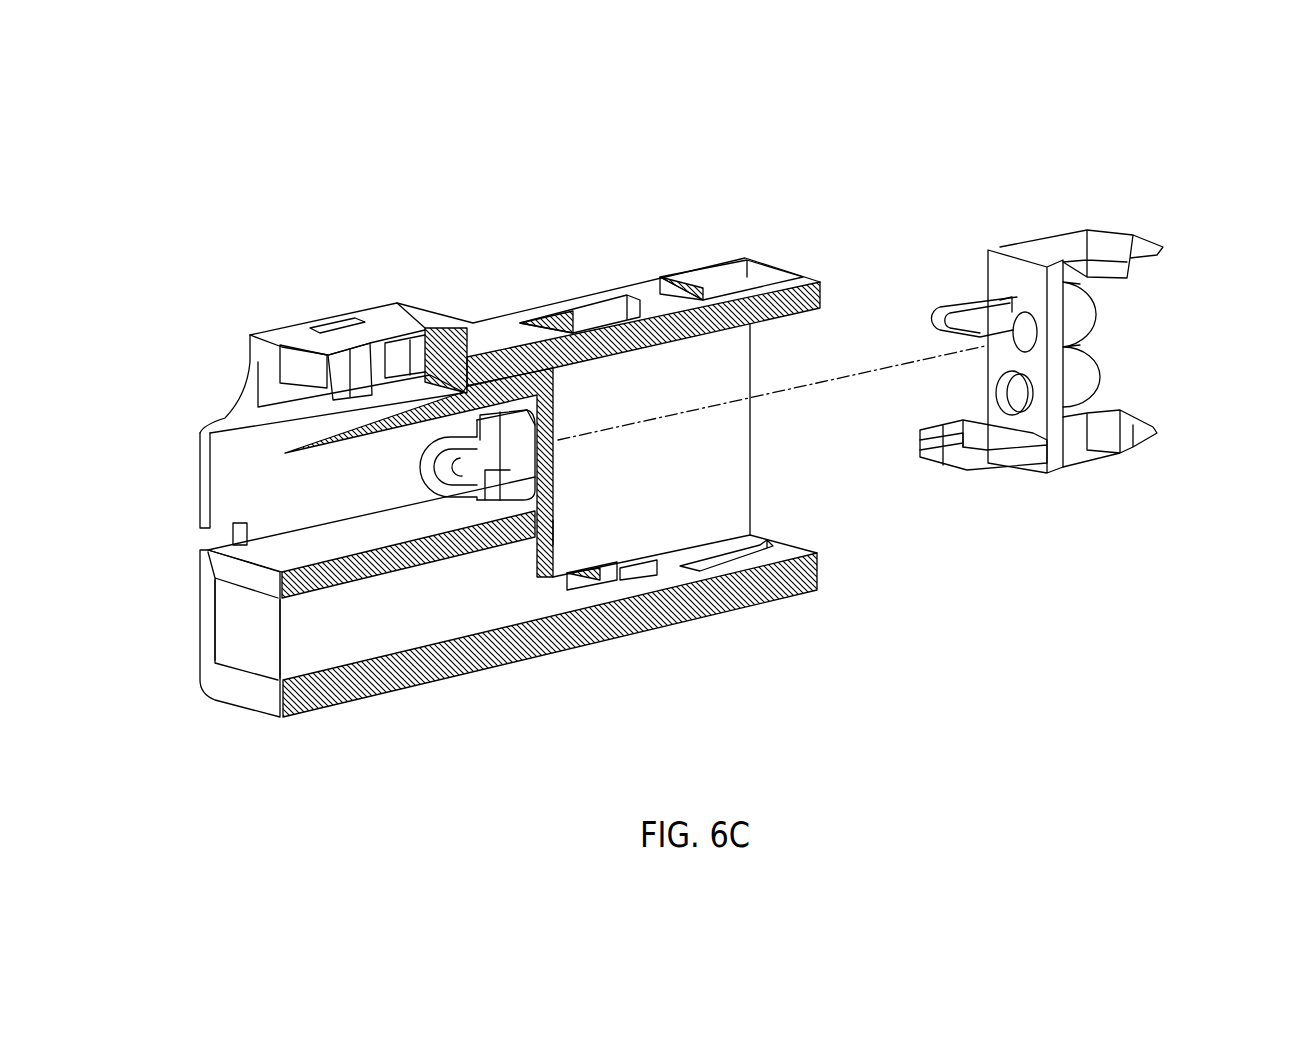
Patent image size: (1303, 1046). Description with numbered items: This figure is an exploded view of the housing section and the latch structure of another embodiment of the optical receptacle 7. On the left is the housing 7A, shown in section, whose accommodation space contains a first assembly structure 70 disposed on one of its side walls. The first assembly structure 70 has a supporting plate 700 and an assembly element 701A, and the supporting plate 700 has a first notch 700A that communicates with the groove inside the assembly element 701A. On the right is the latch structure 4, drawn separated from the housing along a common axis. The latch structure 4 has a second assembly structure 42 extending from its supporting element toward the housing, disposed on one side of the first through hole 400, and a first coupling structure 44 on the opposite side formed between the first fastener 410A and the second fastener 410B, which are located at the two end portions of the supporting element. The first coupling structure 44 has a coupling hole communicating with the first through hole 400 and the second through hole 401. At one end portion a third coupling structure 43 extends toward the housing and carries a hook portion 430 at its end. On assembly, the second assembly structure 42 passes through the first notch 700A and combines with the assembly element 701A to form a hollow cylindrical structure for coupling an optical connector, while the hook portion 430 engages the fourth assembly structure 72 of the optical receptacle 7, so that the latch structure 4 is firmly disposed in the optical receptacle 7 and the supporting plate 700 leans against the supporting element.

The optical receptacle 7 is at (506, 482).
The housing 7A is at (397, 327).
The first notch 700A is at (517, 427).
The supporting plate 700 is at (553, 532).
The assembly element 701A is at (495, 473).
The first assembly structure 70 is at (545, 460).
The fourth assembly structure 72 is at (463, 573).
The latch structure 4 is at (1057, 359).
The second assembly structure 42 is at (1010, 307).
The first fastener 410A is at (1093, 233).
The second fastener 410B is at (1133, 430).
The first coupling structure 44 is at (1090, 317).
The first through hole 400 is at (1010, 308).
The second through hole 401 is at (1023, 397).
The third coupling structure 43 is at (987, 445).
The hook portion 430 is at (943, 448).